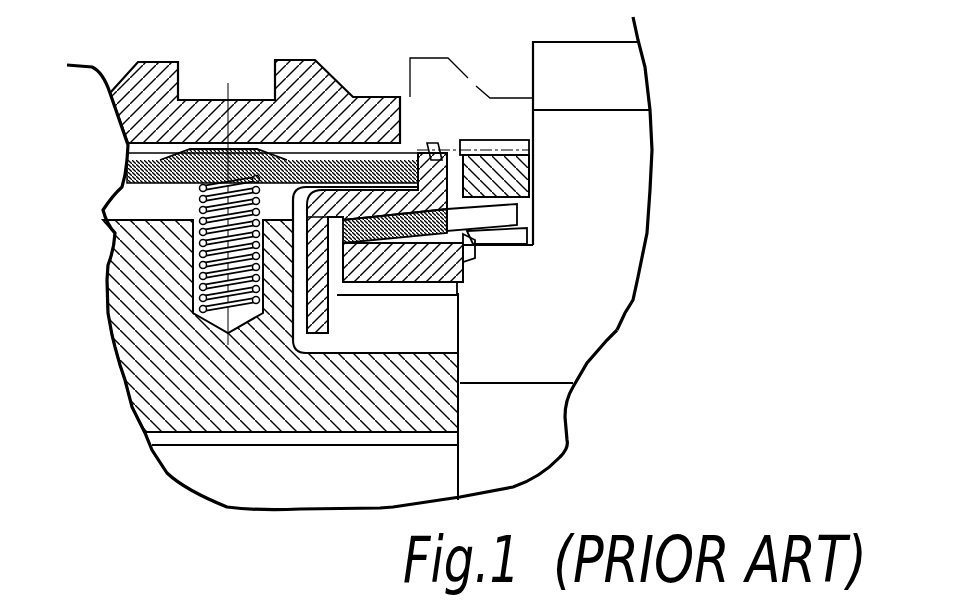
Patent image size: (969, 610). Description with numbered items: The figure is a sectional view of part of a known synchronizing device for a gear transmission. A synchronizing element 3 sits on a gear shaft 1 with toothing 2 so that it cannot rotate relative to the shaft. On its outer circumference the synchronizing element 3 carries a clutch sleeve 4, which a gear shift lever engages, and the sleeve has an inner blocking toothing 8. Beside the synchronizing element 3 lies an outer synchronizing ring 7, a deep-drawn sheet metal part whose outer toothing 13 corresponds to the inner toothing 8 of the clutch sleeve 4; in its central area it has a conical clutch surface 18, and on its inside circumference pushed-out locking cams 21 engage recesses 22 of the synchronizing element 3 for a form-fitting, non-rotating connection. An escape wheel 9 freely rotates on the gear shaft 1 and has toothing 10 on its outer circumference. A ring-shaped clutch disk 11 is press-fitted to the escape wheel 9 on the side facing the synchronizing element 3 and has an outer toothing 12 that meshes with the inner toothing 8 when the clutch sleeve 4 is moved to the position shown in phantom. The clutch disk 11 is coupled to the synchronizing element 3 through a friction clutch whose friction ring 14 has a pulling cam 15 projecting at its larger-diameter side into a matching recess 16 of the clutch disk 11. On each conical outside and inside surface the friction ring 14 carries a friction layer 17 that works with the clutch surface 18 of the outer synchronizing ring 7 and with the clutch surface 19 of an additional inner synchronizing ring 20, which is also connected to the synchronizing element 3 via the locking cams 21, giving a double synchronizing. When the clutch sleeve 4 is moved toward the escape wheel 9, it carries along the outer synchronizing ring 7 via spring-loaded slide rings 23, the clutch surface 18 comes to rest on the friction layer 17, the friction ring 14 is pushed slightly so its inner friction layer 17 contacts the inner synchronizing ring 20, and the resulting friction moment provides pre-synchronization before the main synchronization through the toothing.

The gear shaft 1 is at (282, 487).
The toothing 2 is at (163, 438).
The synchronizing element 3 is at (420, 410).
The clutch sleeve 4 is at (293, 78).
The outer synchronizing ring 7 is at (440, 160).
The inner toothing 8 is at (127, 153).
The escape wheel 9 is at (618, 277).
The toothing 10 is at (555, 53).
The clutch disk 11 is at (533, 167).
The outer toothing 12 is at (487, 148).
The outer toothing 13 is at (432, 153).
The friction ring 14 is at (538, 220).
The pulling cam 15 is at (517, 212).
The recess 16 is at (527, 240).
The friction layer 17 is at (395, 273).
The clutch surface 18 is at (398, 203).
The clutch surface 19 is at (455, 297).
The inner synchronizing ring 20 is at (462, 272).
The locking cams 21 is at (328, 328).
The recesses 22 is at (436, 326).
The slide rings 23 is at (188, 157).